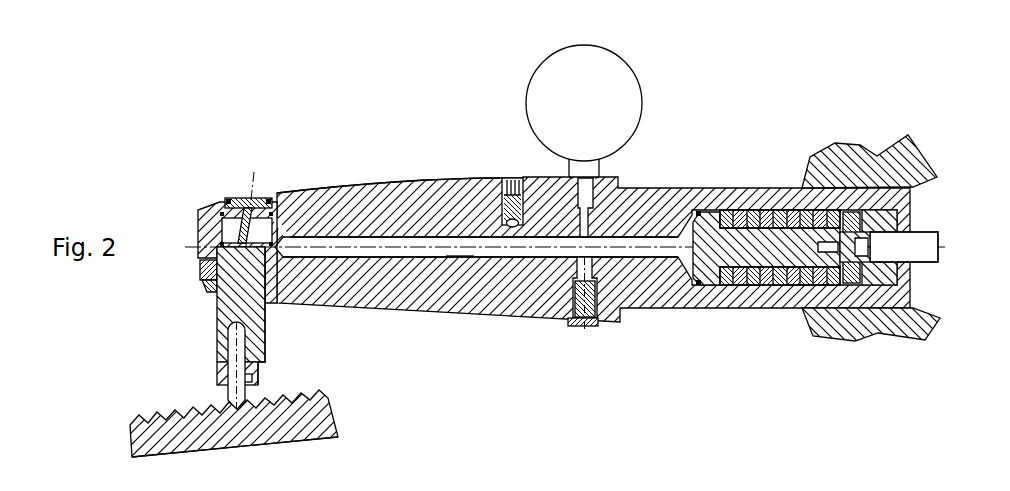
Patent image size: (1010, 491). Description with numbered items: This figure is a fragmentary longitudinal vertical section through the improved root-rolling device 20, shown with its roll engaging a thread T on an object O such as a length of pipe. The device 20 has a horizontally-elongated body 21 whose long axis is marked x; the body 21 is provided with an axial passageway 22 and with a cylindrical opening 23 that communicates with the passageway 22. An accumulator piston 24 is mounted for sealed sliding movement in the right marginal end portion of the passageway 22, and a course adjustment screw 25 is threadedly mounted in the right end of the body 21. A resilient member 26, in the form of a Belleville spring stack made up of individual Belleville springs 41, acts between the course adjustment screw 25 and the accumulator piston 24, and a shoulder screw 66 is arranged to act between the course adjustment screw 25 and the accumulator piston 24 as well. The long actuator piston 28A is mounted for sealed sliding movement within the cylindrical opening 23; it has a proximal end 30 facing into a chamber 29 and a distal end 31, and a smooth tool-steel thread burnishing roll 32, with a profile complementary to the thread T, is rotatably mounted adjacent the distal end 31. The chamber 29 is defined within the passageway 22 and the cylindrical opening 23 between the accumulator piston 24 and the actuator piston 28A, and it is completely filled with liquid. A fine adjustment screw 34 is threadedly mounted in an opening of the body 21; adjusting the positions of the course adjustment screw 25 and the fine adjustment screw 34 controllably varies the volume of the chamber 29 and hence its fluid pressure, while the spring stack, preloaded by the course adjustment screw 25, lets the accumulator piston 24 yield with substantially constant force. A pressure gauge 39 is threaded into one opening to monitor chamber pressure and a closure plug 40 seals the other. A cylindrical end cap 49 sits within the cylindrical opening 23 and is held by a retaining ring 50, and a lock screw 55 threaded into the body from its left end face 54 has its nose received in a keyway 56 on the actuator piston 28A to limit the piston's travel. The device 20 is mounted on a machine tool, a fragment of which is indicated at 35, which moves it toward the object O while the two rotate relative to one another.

The device 20 is at (681, 117).
The body 21 is at (395, 180).
The axial passageway 22 is at (397, 260).
The cylindrical opening 23 is at (220, 312).
The accumulator piston 24 is at (752, 226).
The course adjustment screw 25 is at (919, 219).
The resilient member 26 is at (752, 287).
The long actuator piston 28A is at (260, 328).
The chamber 29 is at (480, 245).
The proximal end 30 is at (222, 232).
The distal end 31 is at (217, 385).
The thread burnishing roll 32 is at (227, 347).
The fine adjustment screw 34 is at (505, 176).
The machine tool 35 is at (865, 140).
The pressure gauge 39 is at (526, 97).
The closure plug 40 is at (590, 330).
The Belleville springs 41 is at (778, 281).
The cylindrical end cap 49 is at (230, 202).
The retaining ring 50 is at (261, 199).
The left end face 54 is at (193, 213).
The lock screw 55 is at (195, 275).
The keyway 56 is at (213, 290).
The shoulder screw 66 is at (861, 267).
The thread T is at (138, 418).
The object O is at (341, 441).
The longitudinal axis x is at (565, 247).